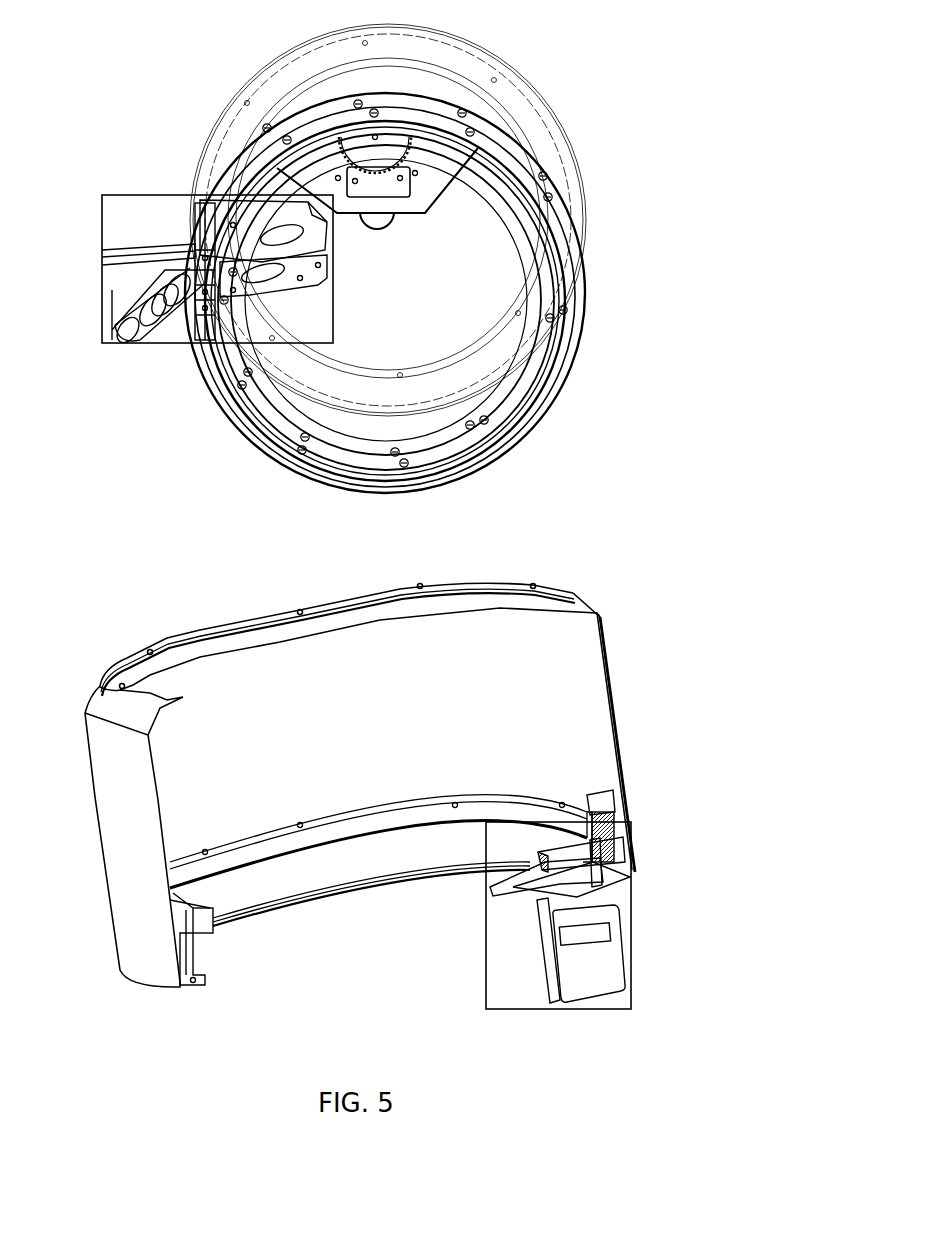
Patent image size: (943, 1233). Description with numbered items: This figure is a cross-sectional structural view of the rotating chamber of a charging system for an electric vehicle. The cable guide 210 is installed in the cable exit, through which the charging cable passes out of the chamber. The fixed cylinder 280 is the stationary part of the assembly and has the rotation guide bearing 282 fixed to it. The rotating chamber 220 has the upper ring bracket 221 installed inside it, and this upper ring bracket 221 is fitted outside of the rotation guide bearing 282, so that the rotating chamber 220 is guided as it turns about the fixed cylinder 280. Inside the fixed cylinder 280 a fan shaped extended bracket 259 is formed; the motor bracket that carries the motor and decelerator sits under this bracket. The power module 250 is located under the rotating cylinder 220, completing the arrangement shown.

The cable guide 210 is at (140, 195).
The fan shaped extended bracket 259 is at (450, 172).
The rotating chamber 220 is at (223, 678).
The upper ring bracket 221 is at (597, 800).
The rotation guide bearing 282 is at (273, 847).
The fixed cylinder 280 is at (356, 860).
The power module 250 is at (486, 985).